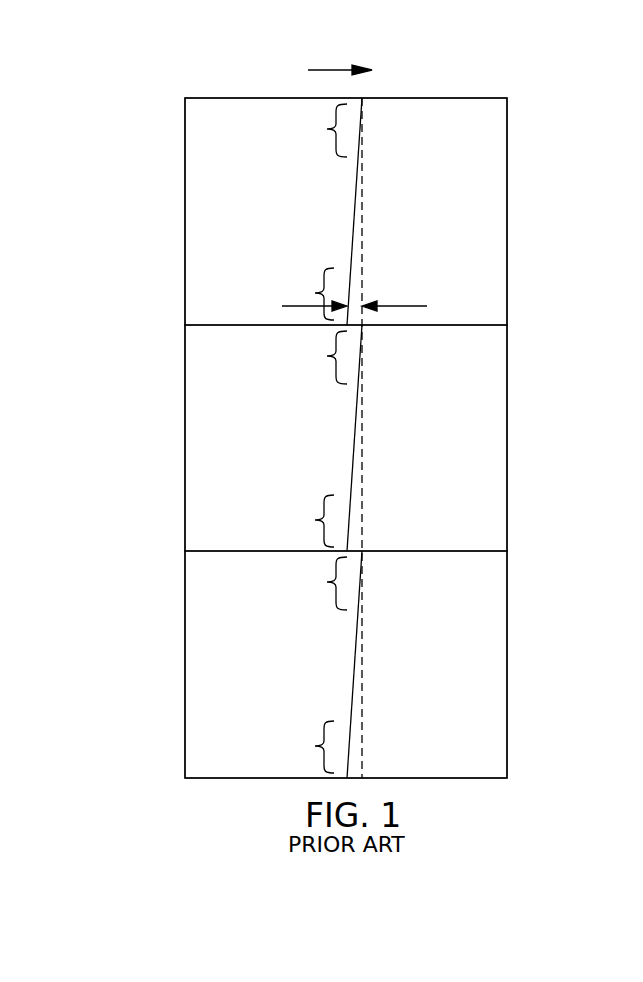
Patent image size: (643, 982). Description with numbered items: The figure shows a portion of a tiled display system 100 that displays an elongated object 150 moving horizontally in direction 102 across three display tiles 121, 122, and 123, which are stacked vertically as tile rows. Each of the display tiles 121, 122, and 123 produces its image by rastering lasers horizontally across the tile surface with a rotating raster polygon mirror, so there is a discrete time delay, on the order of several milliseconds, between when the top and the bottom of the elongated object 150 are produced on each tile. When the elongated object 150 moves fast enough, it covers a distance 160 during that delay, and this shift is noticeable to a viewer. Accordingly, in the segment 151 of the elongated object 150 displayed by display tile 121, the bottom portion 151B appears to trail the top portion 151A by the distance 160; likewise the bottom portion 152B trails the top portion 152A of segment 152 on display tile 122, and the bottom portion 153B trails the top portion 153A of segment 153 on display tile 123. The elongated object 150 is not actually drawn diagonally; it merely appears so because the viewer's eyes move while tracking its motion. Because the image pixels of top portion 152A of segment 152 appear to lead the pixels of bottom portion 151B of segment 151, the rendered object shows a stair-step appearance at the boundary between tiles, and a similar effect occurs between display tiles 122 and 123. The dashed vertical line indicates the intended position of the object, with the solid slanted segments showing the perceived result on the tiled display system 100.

The tiled display system 100 is at (145, 90).
The direction 102 is at (329, 70).
The display tile 121 is at (507, 168).
The display tile 122 is at (507, 395).
The display tile 123 is at (507, 621).
The elongated object 150 is at (372, 125).
The segment 151 is at (353, 204).
The top portion 151A is at (327, 129).
The bottom portion 151B is at (315, 293).
The segment 152 is at (353, 431).
The top portion 152A is at (327, 356).
The bottom portion 152B is at (315, 520).
The segment 153 is at (353, 657).
The top portion 153A is at (327, 582).
The bottom portion 153B is at (315, 746).
The distance 160 is at (402, 306).